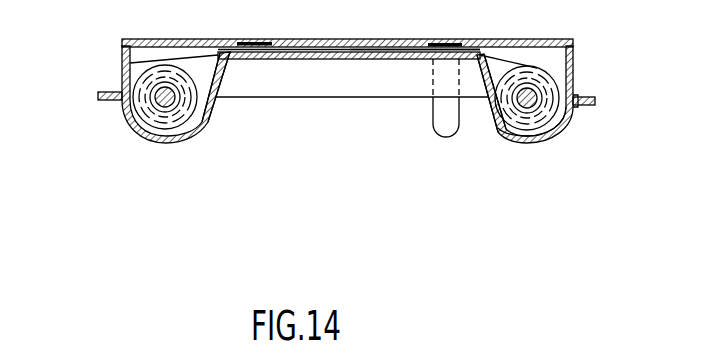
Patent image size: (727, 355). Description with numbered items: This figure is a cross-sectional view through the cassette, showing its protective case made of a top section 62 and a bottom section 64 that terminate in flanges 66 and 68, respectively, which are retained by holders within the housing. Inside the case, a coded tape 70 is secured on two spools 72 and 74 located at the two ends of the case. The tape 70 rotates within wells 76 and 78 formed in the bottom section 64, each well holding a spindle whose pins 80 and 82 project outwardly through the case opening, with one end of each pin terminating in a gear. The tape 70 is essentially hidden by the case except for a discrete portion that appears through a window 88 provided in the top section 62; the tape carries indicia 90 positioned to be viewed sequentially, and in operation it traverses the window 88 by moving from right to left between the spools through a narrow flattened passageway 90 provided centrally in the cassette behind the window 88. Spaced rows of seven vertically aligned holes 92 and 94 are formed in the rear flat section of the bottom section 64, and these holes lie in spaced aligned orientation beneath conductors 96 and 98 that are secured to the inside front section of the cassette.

The top section 62 is at (548, 42).
The bottom section 64 is at (562, 133).
The flange 66 is at (100, 102).
The flange 68 is at (577, 107).
The coded tape 70 is at (207, 39).
The spool 72 is at (173, 133).
The spool 74 is at (532, 133).
The well 76 is at (197, 130).
The well 78 is at (505, 132).
The pin 80 is at (162, 98).
The pin 82 is at (531, 98).
The window 88 is at (303, 40).
The indicia 90 is at (370, 47).
The holes 92 is at (255, 59).
The holes 94 is at (437, 59).
The conductor 96 is at (253, 42).
The conductor 98 is at (459, 42).